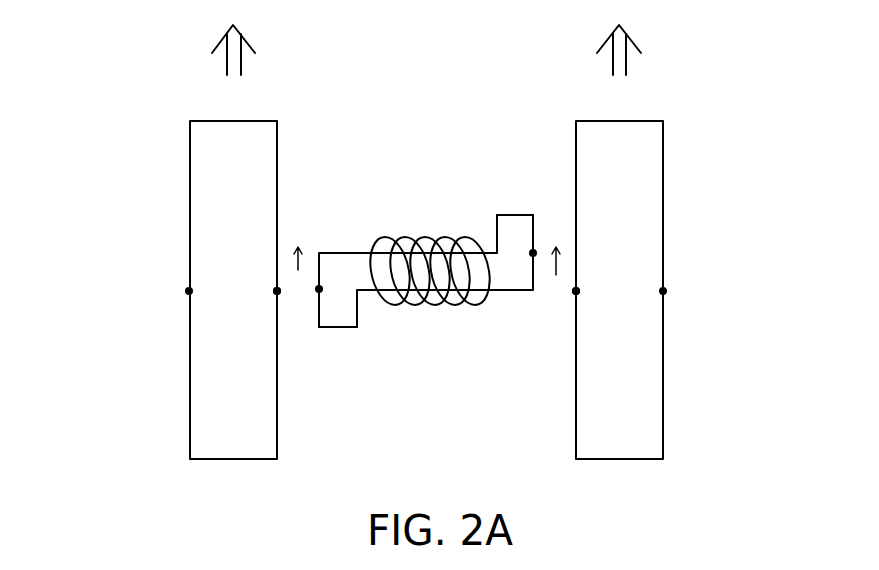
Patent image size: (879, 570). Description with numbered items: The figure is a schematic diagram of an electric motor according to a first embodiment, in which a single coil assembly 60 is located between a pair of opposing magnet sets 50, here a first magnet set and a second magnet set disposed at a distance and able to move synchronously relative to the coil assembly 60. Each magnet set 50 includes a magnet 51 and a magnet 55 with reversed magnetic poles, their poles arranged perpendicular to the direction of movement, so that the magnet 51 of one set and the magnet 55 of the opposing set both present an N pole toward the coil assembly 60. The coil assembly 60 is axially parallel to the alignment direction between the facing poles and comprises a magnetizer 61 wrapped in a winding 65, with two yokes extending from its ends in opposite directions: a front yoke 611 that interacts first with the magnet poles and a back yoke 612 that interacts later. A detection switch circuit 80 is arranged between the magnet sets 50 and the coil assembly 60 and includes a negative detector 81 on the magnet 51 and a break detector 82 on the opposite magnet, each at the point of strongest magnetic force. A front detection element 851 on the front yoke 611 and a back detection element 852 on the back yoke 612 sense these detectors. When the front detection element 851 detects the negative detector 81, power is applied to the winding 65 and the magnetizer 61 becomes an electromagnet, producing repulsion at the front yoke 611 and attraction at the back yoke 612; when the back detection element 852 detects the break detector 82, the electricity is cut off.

The magnet set 50 is at (422, 241).
The magnet 51 is at (198, 420).
The magnet 55 is at (650, 415).
The coil assembly 60 is at (436, 245).
The magnetizer 61 is at (495, 285).
The front yoke 611 is at (342, 320).
The back yoke 612 is at (517, 217).
The winding 65 is at (417, 307).
The detection switch circuit 80 is at (426, 365).
The negative detector 81 is at (280, 291).
The break detector 82 is at (576, 291).
The front detection element 851 is at (319, 289).
The back detection element 852 is at (533, 252).